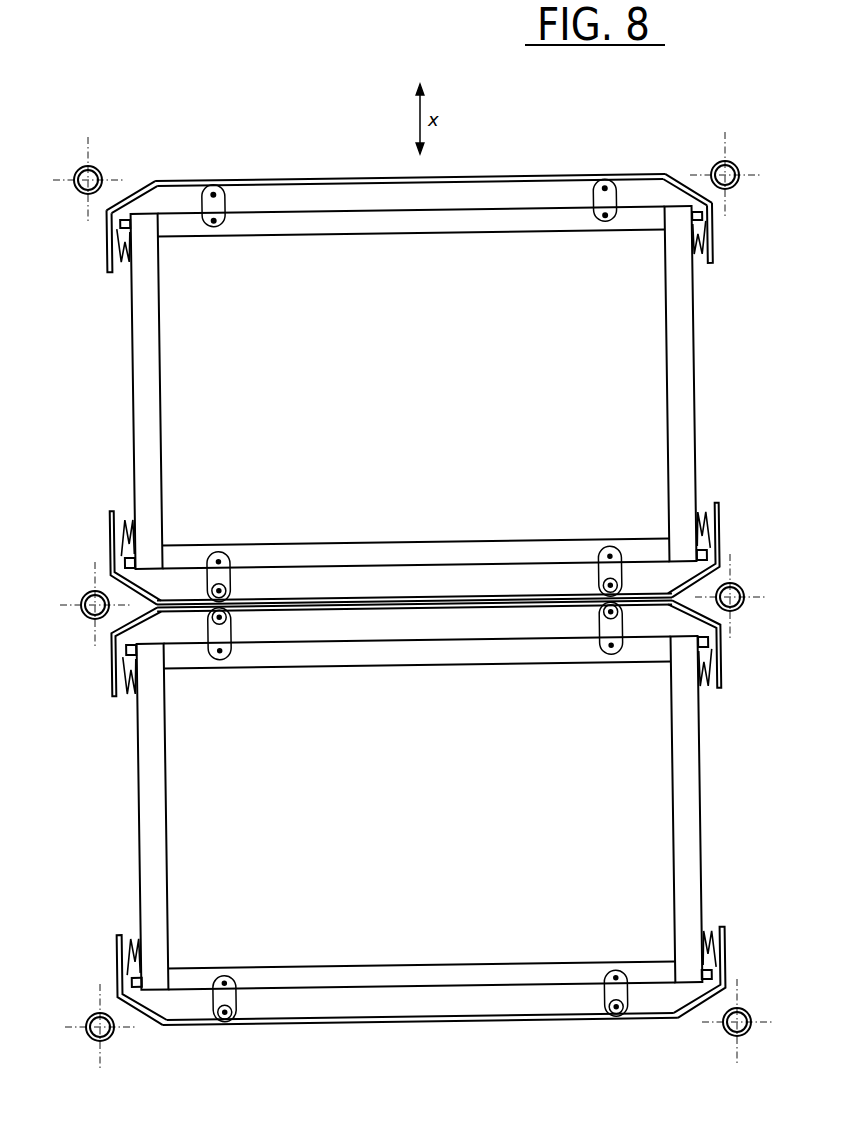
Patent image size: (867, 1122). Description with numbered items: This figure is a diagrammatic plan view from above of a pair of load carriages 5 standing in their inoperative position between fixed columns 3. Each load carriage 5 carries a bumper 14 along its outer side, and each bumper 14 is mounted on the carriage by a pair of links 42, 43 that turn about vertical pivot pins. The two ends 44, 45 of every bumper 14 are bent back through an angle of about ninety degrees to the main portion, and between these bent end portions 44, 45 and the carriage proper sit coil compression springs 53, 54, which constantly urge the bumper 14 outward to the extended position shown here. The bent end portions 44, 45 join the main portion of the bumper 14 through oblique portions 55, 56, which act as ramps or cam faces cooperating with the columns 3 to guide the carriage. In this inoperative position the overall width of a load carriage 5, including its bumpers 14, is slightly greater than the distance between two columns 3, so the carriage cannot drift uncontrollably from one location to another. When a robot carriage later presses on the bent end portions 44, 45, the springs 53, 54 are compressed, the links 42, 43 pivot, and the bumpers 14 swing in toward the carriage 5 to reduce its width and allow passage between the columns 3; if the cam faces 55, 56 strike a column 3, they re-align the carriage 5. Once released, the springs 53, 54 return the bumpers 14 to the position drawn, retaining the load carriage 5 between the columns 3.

The column 3 is at (75, 178).
The load carriage 5 is at (417, 598).
The bumper 14 is at (265, 182).
The link 42 is at (205, 208).
The link 43 is at (595, 205).
The bent end portion of bumper 44 is at (107, 235).
The bent end portion of bumper 45 is at (712, 235).
The coil compression spring 53 is at (128, 263).
The coil compression spring 54 is at (698, 258).
The oblique portion 55 is at (133, 195).
The oblique portion 56 is at (685, 178).